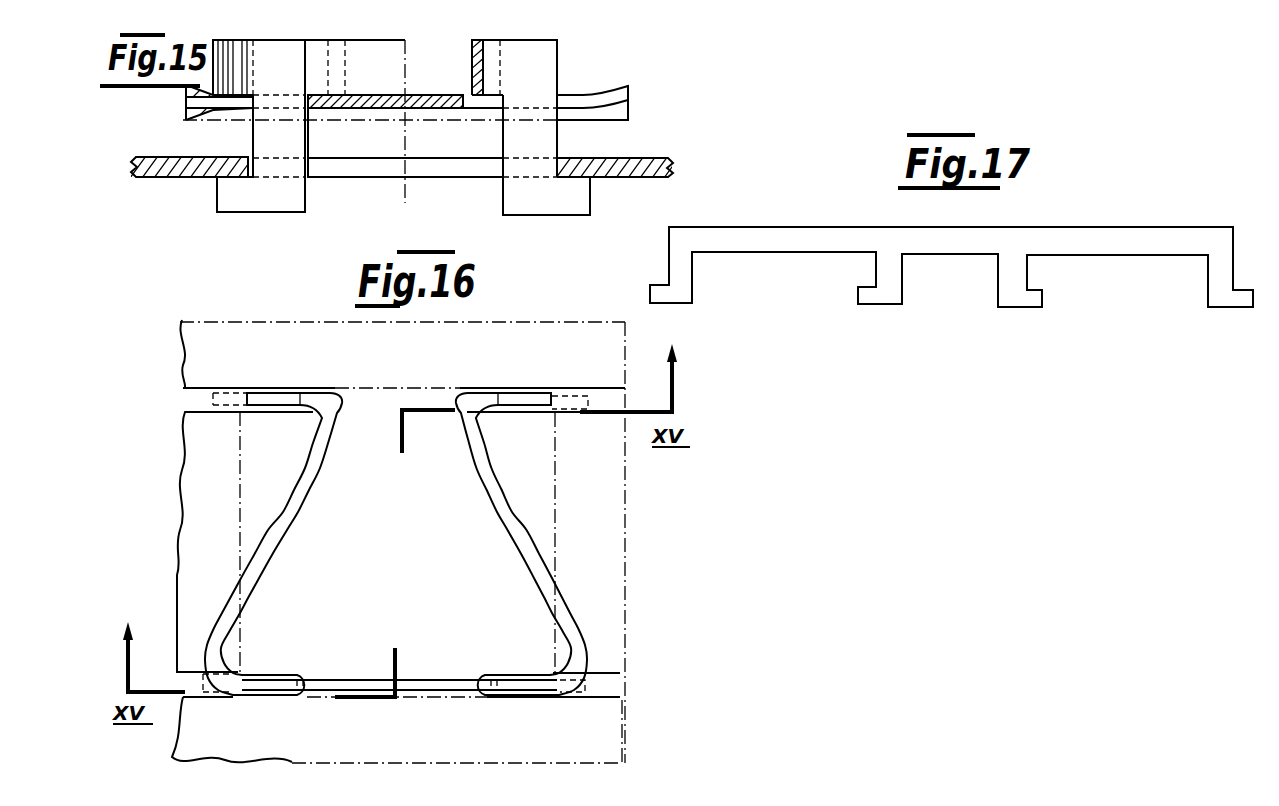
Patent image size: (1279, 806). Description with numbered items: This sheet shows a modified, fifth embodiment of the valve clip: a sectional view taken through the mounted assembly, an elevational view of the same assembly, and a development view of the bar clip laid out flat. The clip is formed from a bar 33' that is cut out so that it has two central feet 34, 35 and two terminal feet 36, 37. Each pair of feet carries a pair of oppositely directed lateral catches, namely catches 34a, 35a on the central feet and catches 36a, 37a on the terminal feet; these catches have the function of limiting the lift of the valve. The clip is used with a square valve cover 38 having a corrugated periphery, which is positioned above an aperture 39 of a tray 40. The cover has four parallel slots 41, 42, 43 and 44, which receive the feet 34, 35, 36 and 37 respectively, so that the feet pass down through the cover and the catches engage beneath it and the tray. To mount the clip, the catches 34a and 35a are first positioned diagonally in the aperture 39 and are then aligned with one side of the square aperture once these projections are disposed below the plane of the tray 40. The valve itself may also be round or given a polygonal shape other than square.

In FIG. 17, the bar 33' is at (951, 247).
In FIG. 15, the central foot 34 is at (273, 138).
In FIG. 17, the central foot 34 is at (892, 270).
In FIG. 15, the lateral catch 34a is at (248, 200).
In FIG. 16, the lateral catch 34a is at (210, 687).
In FIG. 17, the lateral catch 34a is at (875, 297).
In FIG. 17, the central foot 35 is at (1003, 274).
In FIG. 16, the lateral catch 35a is at (585, 690).
In FIG. 17, the lateral catch 35a is at (1028, 297).
In FIG. 16, the terminal foot 36 is at (278, 388).
In FIG. 17, the terminal foot 36 is at (678, 270).
In FIG. 16, the lateral catch 36a is at (217, 395).
In FIG. 17, the lateral catch 36a is at (658, 293).
In FIG. 15, the terminal foot 37 is at (537, 140).
In FIG. 16, the terminal foot 37 is at (513, 403).
In FIG. 17, the terminal foot 37 is at (1220, 275).
In FIG. 15, the lateral catch 37a is at (563, 205).
In FIG. 16, the lateral catch 37a is at (570, 412).
In FIG. 17, the lateral catch 37a is at (1228, 305).
In FIG. 15, the square valve cover 38 is at (368, 98).
In FIG. 16, the square valve cover 38 is at (415, 477).
In FIG. 15, the aperture 39 is at (346, 173).
In FIG. 15, the tray 40 is at (178, 170).
In FIG. 15, the slot 41 is at (190, 103).
In FIG. 16, the slot 41 is at (262, 698).
In FIG. 16, the slot 42 is at (520, 698).
In FIG. 16, the slot 43 is at (257, 413).
In FIG. 15, the slot 44 is at (570, 100).
In FIG. 16, the slot 44 is at (532, 413).